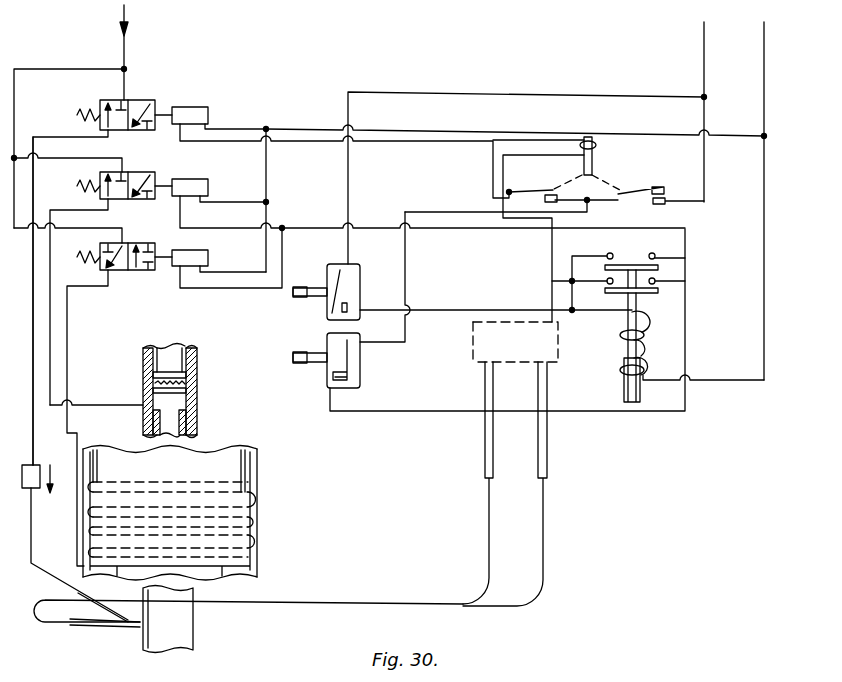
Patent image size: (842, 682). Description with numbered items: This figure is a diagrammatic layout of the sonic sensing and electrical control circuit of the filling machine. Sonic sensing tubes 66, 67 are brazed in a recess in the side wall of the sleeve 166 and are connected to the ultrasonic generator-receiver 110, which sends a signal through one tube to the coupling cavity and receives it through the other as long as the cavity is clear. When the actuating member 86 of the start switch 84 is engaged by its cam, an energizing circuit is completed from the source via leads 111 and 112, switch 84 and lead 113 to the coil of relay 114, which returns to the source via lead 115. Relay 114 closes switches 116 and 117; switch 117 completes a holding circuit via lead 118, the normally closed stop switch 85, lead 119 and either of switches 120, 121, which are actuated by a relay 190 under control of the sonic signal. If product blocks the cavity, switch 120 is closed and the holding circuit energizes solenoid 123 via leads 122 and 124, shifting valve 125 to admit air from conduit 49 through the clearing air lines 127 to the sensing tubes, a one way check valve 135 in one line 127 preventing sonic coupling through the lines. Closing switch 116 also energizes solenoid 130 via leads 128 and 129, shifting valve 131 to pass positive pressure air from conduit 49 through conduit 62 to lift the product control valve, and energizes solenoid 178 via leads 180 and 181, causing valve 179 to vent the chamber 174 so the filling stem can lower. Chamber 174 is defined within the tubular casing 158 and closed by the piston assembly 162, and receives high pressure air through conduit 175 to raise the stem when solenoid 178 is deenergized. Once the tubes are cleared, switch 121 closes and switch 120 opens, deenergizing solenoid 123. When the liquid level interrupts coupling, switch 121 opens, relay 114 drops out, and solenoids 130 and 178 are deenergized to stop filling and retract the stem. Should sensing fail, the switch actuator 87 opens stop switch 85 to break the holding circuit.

The conduit 49 is at (129, 38).
The valve 125 is at (143, 100).
The solenoid 123 is at (201, 106).
The valve 131 is at (165, 170).
The solenoid 130 is at (194, 181).
The lead 129 is at (253, 188).
The valve 179 is at (163, 237).
The solenoid 178 is at (198, 249).
The lead 180 is at (192, 299).
The lead 181 is at (271, 163).
The conduit 175 is at (70, 322).
The conduit 62 is at (112, 399).
The air line 127 is at (28, 446).
The one way check valve 135 is at (35, 491).
The tubular casing 158 is at (262, 465).
The piston assembly 162 is at (255, 519).
The chamber 174 is at (258, 572).
The sleeve 166 is at (195, 637).
The lead 112 is at (545, 93).
The lead 111 is at (704, 55).
The lead 115 is at (766, 303).
The lead 122 is at (402, 151).
The lead 119 is at (456, 210).
The lead 128 is at (447, 238).
The lead 124 is at (608, 135).
The relay 190 is at (598, 152).
The switch 120 is at (545, 178).
The switch 121 is at (655, 182).
The switch 116 is at (647, 258).
The switch 117 is at (643, 299).
The lead 118 is at (690, 327).
The relay 114 is at (618, 366).
The lead 113 is at (525, 306).
The generator-receiver 110 is at (472, 342).
The sonic sensing tube 66 is at (484, 451).
The sonic sensing tube 67 is at (550, 450).
The actuating member 86 is at (292, 298).
The start switch 84 is at (322, 316).
The switch actuator 87 is at (290, 366).
The stop switch 85 is at (362, 385).